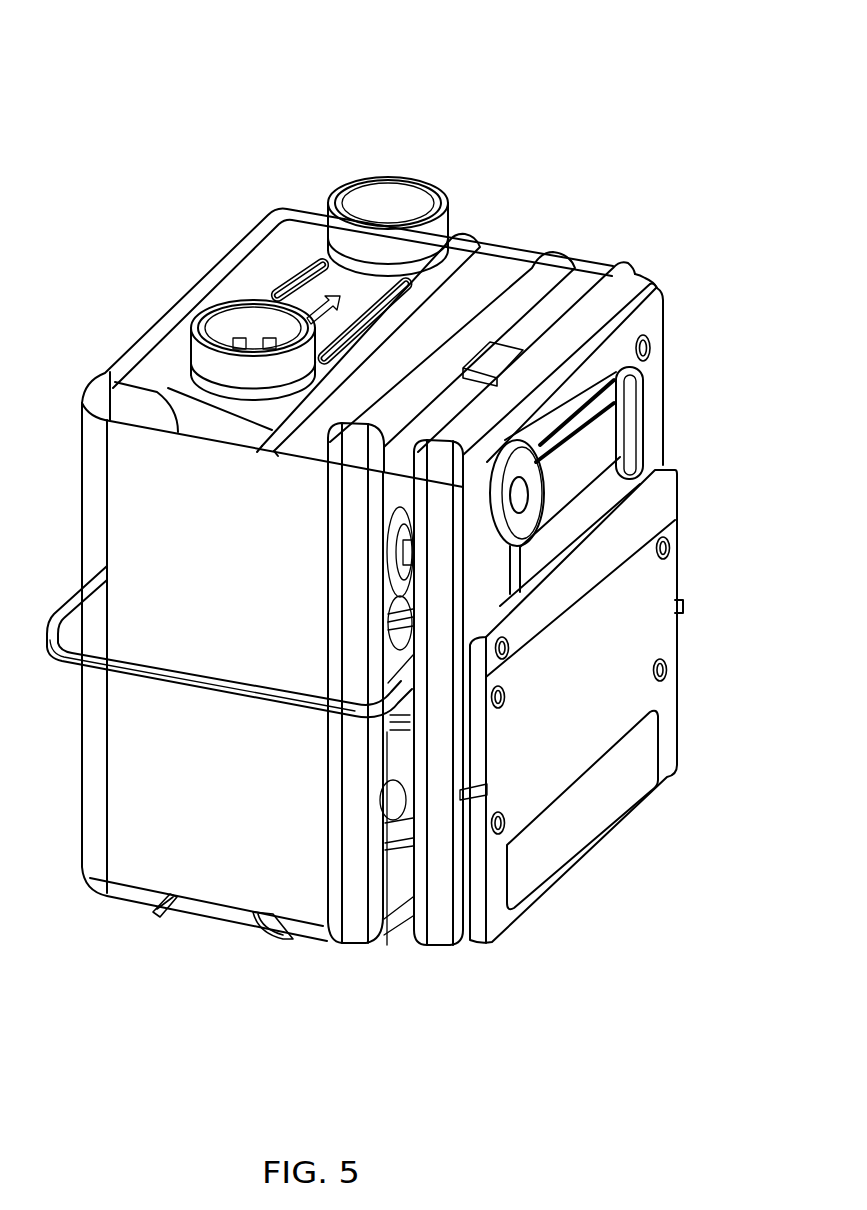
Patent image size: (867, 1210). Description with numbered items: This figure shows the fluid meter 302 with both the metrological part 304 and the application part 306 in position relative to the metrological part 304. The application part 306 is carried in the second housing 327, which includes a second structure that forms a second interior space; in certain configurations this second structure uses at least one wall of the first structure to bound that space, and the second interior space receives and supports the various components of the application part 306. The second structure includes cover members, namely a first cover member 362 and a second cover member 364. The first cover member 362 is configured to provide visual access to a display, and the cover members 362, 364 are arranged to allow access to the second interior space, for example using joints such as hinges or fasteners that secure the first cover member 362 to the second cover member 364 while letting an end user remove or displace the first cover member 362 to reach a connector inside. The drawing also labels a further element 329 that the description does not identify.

The fluid meter 302 is at (410, 568).
The metrological part 304 is at (303, 968).
The application part 306 is at (465, 997).
The second housing 327 is at (617, 227).
The latch arm 329 is at (596, 502).
The first cover member 362 is at (682, 260).
The second cover member 364 is at (588, 247).